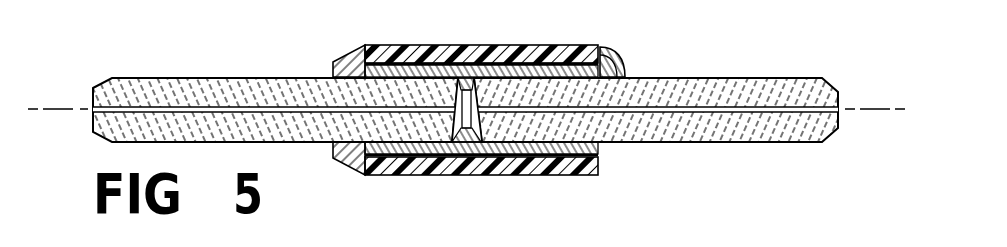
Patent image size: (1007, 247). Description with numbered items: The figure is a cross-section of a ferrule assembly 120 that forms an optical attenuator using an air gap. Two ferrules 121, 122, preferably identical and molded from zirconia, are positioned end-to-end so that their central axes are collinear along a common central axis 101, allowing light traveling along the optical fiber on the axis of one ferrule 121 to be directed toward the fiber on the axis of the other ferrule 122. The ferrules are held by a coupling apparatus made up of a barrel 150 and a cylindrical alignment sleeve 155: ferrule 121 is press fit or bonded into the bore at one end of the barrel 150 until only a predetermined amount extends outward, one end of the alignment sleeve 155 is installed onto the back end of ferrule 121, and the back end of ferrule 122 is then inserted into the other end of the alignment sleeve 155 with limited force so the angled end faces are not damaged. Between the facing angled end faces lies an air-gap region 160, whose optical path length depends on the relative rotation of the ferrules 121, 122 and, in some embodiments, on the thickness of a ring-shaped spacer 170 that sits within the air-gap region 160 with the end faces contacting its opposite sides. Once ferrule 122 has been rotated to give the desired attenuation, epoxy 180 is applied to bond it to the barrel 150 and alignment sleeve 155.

The central axis 101 is at (64, 107).
The ferrule assembly 120 is at (474, 103).
The ferrule 121 is at (222, 80).
The ferrule 122 is at (712, 80).
The barrel 150 is at (540, 46).
The alignment sleeve 155 is at (600, 148).
The air-gap region 160 is at (462, 112).
The spacer 170 is at (457, 145).
The epoxy 180 is at (612, 58).